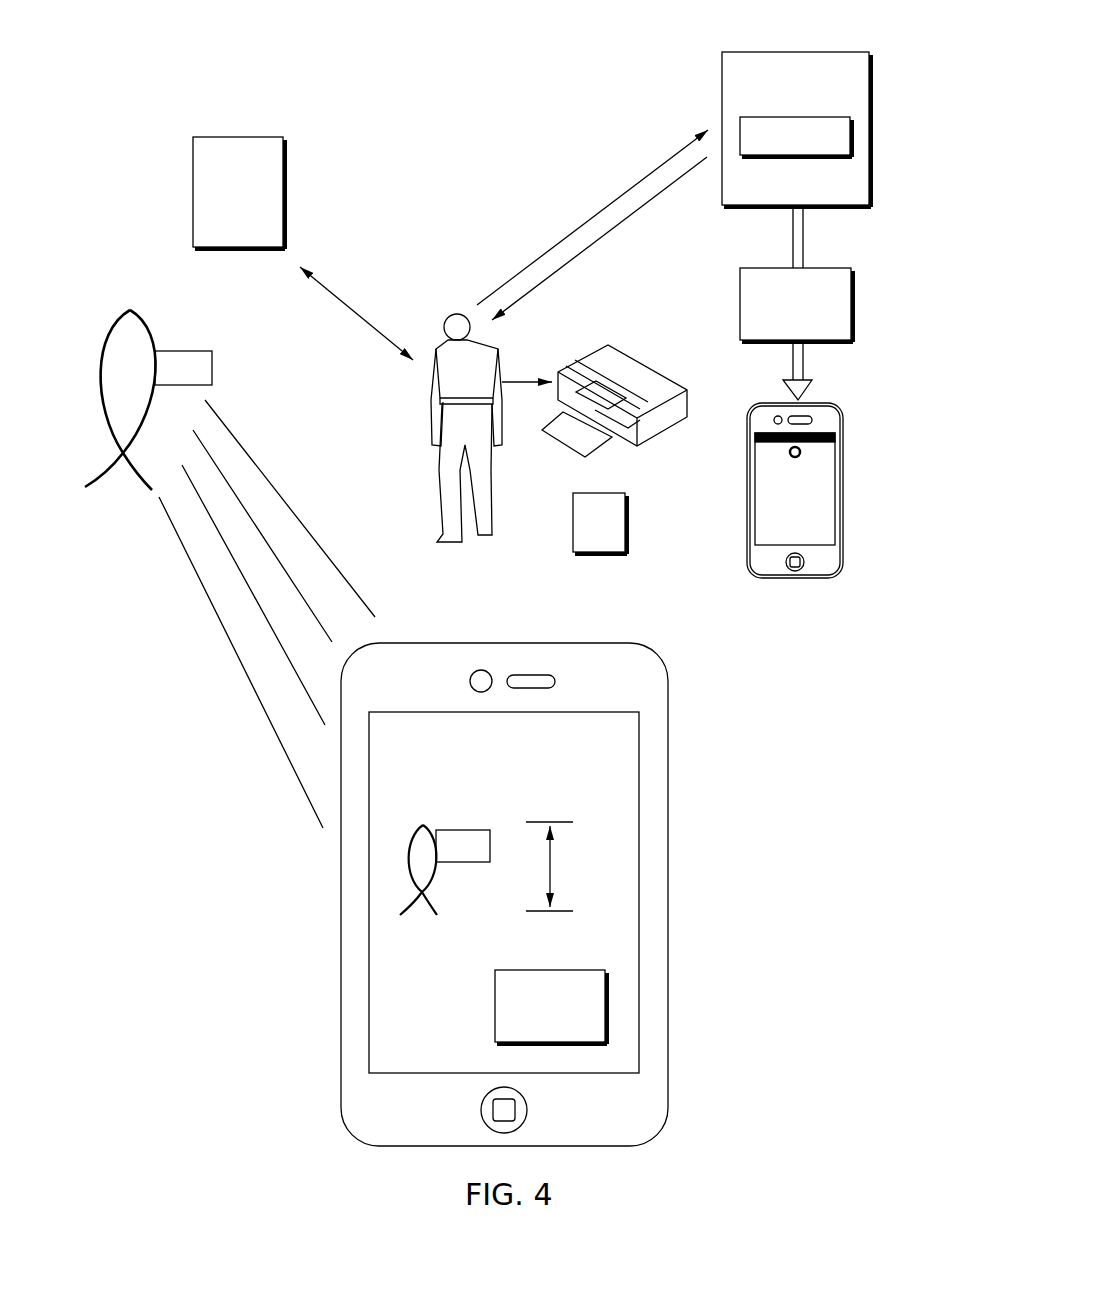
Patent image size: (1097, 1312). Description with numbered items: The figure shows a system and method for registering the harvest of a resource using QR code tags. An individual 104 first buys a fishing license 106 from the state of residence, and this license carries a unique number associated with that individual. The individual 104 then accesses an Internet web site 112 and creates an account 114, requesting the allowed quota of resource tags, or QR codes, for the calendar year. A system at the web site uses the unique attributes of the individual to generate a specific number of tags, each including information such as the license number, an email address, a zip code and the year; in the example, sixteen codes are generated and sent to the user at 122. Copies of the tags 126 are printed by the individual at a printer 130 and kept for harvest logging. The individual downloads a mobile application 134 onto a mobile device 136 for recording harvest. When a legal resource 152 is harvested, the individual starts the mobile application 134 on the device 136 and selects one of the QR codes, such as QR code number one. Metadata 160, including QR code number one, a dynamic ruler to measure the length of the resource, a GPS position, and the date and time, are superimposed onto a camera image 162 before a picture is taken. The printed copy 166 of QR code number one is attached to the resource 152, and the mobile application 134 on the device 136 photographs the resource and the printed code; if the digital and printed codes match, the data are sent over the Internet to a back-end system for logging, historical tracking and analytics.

The individual 104 is at (440, 470).
The fishing license 106 is at (284, 176).
The Internet web site 112 is at (721, 80).
The account 114 is at (794, 117).
The QR codes sent to the user 122 is at (660, 255).
The tags 126 is at (627, 513).
The printer 130 is at (668, 378).
The mobile application 134 is at (853, 307).
The mobile device 136 is at (843, 421).
The legal resource 152 is at (130, 309).
The metadata 160 is at (555, 789).
The camera image 162 is at (433, 757).
The printed copy of QR code 166 is at (194, 351).